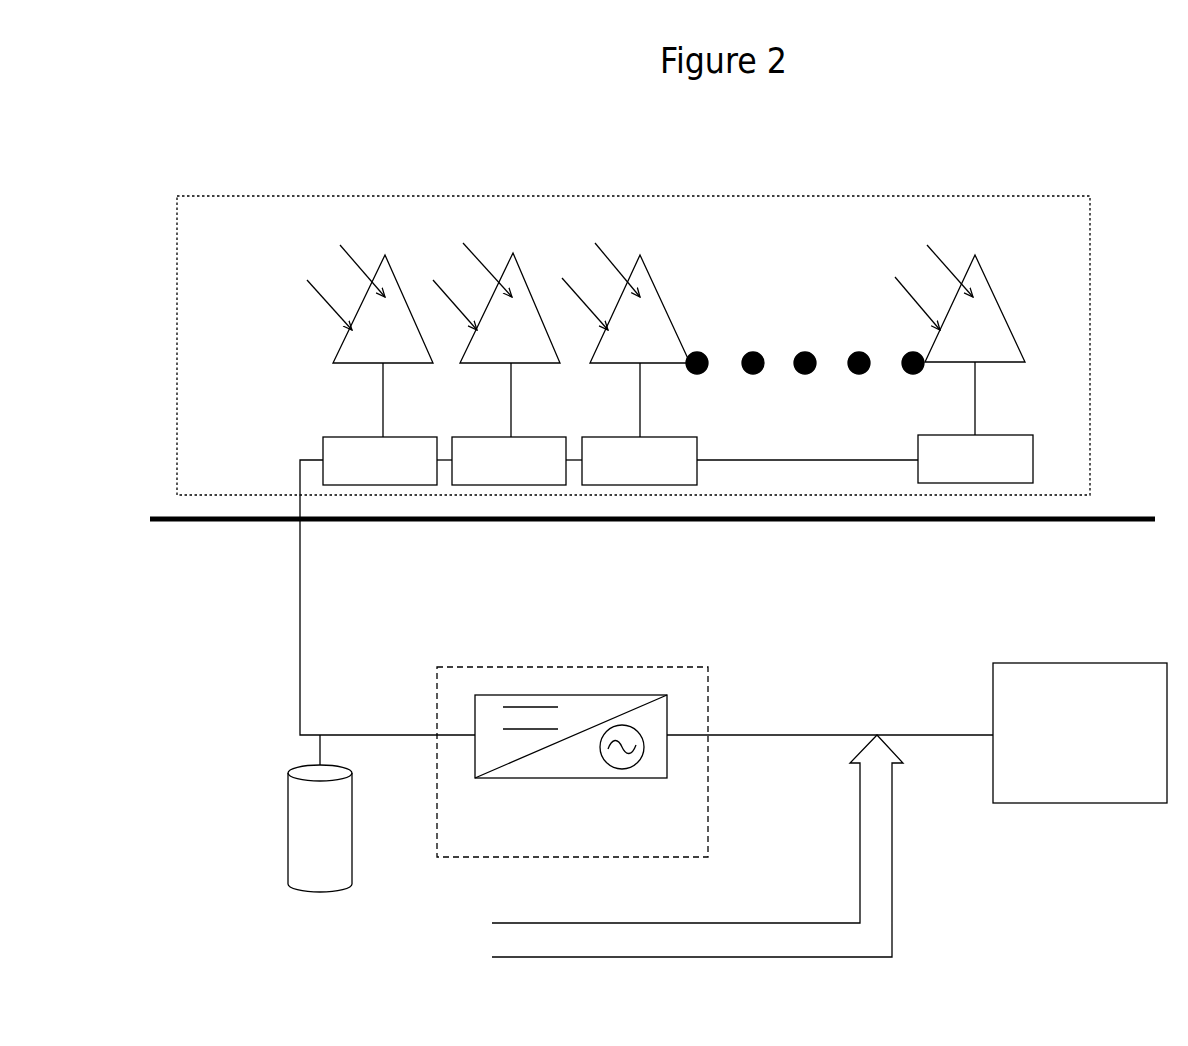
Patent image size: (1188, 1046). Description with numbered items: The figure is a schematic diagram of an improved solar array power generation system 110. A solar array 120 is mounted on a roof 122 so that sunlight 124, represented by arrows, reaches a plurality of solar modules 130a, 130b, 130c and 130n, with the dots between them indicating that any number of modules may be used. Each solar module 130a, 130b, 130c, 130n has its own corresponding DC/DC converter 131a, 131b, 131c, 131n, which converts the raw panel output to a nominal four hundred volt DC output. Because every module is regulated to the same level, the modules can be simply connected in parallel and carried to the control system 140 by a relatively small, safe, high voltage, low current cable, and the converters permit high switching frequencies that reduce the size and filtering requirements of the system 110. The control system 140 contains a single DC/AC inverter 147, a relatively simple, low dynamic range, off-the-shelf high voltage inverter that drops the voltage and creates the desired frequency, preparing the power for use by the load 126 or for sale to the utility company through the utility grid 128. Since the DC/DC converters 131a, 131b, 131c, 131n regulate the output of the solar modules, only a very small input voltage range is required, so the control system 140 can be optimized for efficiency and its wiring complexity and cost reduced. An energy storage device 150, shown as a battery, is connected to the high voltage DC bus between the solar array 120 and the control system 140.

The solar array power generation system 110 is at (214, 580).
The solar array 120 is at (200, 196).
The roof 122 is at (1117, 518).
The sunlight 124 is at (328, 293).
The load 126 is at (1062, 688).
The utility grid 128 is at (885, 853).
The solar module 130a is at (402, 277).
The solar module 130b is at (527, 272).
The solar module 130c is at (645, 262).
The solar module 130n is at (990, 282).
The DC/DC converter 131a is at (350, 445).
The DC/DC converter 131b is at (475, 448).
The DC/DC converter 131c is at (610, 448).
The DC/DC converter 131n is at (1050, 405).
The control system 140 is at (453, 666).
The DC/AC inverter 147 is at (593, 715).
The energy storage device 150 is at (302, 809).